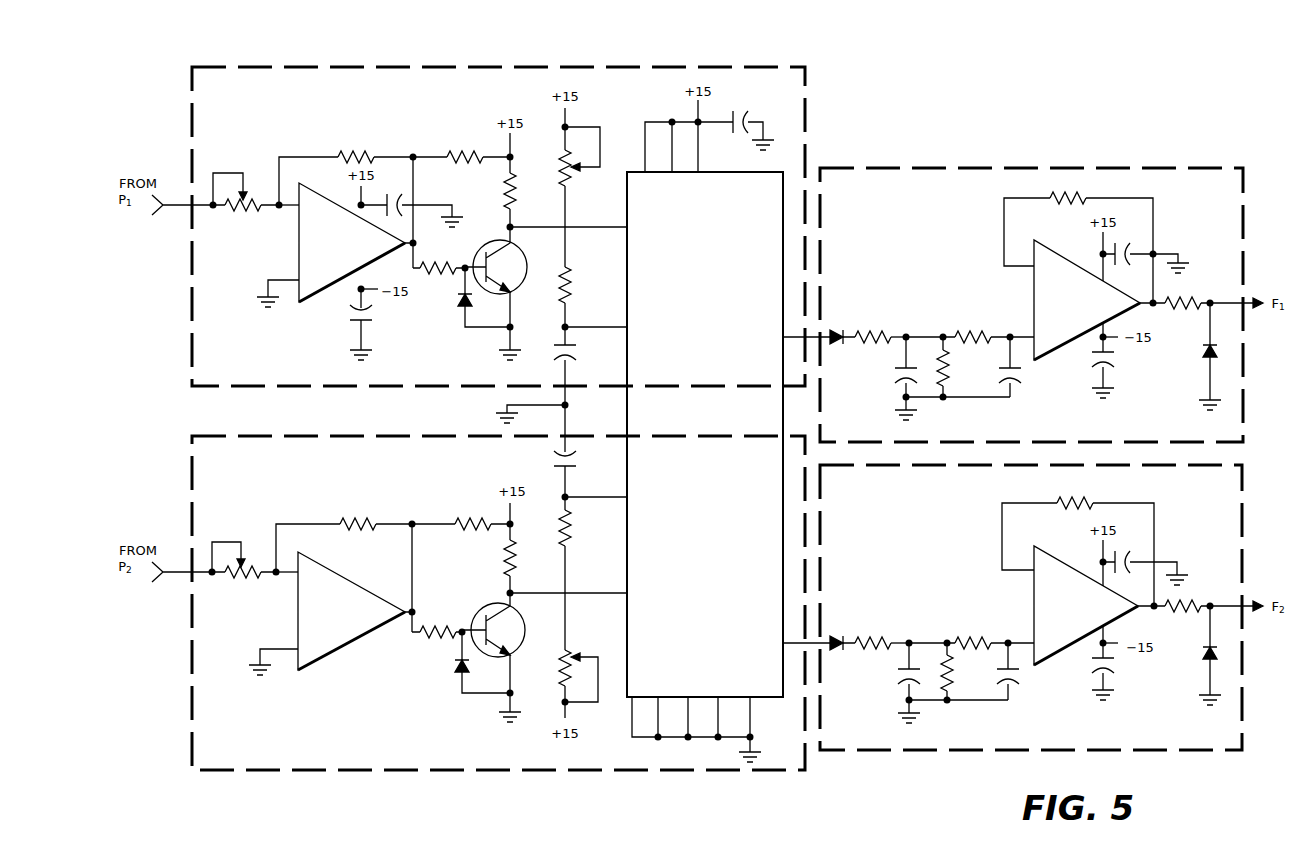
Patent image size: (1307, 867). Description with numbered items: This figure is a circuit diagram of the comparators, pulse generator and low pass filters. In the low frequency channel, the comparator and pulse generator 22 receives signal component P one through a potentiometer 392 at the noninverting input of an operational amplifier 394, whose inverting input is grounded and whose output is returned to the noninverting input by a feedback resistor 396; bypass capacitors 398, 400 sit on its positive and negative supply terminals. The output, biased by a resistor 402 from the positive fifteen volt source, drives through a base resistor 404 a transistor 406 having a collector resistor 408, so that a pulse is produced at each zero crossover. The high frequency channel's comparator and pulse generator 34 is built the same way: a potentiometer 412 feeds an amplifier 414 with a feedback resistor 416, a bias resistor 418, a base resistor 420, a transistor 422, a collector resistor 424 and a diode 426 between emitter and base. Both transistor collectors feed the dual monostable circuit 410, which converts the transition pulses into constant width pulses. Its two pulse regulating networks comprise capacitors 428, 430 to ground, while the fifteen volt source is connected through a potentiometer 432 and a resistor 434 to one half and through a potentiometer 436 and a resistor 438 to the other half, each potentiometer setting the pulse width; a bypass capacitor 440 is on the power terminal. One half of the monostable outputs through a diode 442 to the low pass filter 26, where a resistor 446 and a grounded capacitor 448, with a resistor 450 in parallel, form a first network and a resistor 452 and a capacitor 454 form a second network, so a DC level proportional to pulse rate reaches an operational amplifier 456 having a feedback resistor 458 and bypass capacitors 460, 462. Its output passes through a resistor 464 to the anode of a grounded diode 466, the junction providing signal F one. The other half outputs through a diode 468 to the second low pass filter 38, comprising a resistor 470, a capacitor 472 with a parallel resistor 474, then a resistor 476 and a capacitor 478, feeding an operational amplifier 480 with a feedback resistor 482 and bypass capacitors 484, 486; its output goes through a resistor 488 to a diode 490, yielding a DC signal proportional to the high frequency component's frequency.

The comparator and pulse generator 22 is at (192, 128).
The comparator and pulse generator 34 is at (192, 490).
The low pass filter 26 is at (1018, 168).
The second output filter circuit 38 is at (913, 750).
The potentiometer 392 is at (246, 214).
The operational amplifier 394 is at (345, 257).
The feedback resistor 396 is at (356, 157).
The bypass capacitor 398 is at (393, 196).
The bypass capacitor 400 is at (357, 312).
The resistor 402 is at (457, 157).
The base resistor 404 is at (436, 268).
The transistor 406 is at (512, 268).
The collector resistor 408 is at (509, 192).
The dual monostable circuit 410 is at (683, 299).
The potentiometer 412 is at (244, 582).
The amplifier 414 is at (345, 625).
The feedback resistor 416 is at (360, 524).
The resistor 418 is at (473, 524).
The base resistor 420 is at (426, 640).
The transistor 422 is at (512, 640).
The collector resistor 424 is at (509, 560).
The diode 426 is at (462, 669).
The capacitor 428 is at (562, 348).
The capacitor 430 is at (550, 462).
The potentiometer 432 is at (565, 170).
The resistor 434 is at (574, 284).
The potentiometer 436 is at (562, 664).
The resistor 438 is at (575, 530).
The bypass capacitor 440 is at (741, 115).
The diode 442 is at (840, 328).
The resistor 446 is at (869, 334).
The capacitor 448 is at (890, 373).
The resistor 450 is at (949, 370).
The resistor 452 is at (976, 334).
The capacitor 454 is at (1024, 371).
The operational amplifier 456 is at (1051, 309).
The feedback resistor 458 is at (1074, 198).
The bypass capacitor 460 is at (1131, 250).
The bypass capacitor 462 is at (1110, 366).
The resistor 464 is at (1186, 301).
The diode 466 is at (1208, 346).
The diode 468 is at (838, 637).
The resistor 470 is at (870, 639).
The capacitor 472 is at (896, 674).
The resistor 474 is at (953, 682).
The resistor 476 is at (973, 639).
The capacitor 478 is at (1019, 676).
The operational amplifier 480 is at (1051, 612).
The feedback resistor 482 is at (1078, 503).
The bypass capacitor 484 is at (1131, 560).
The bypass capacitor 486 is at (1110, 669).
The resistor 488 is at (1186, 605).
The diode 490 is at (1208, 648).